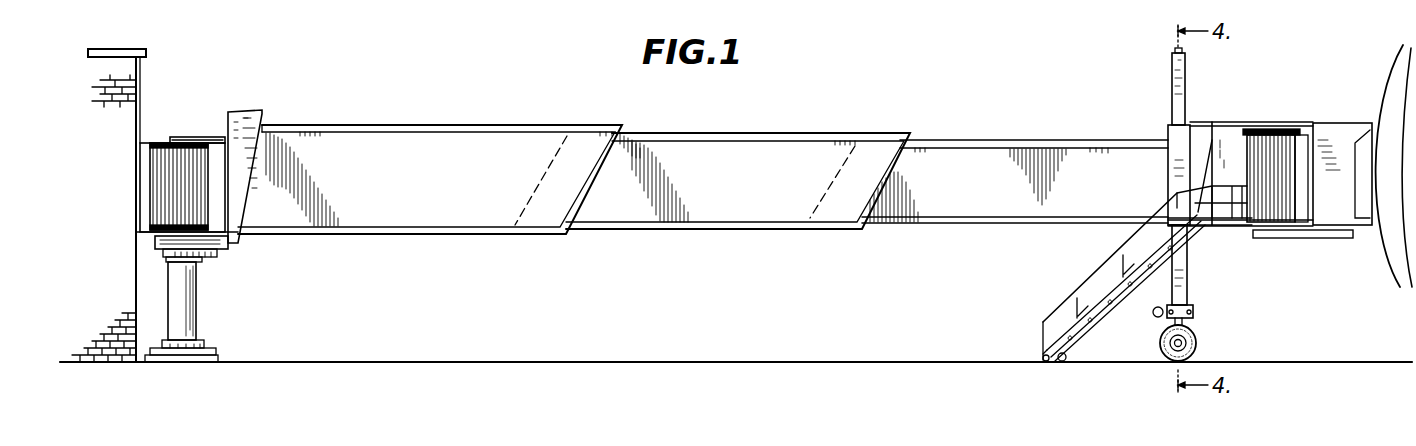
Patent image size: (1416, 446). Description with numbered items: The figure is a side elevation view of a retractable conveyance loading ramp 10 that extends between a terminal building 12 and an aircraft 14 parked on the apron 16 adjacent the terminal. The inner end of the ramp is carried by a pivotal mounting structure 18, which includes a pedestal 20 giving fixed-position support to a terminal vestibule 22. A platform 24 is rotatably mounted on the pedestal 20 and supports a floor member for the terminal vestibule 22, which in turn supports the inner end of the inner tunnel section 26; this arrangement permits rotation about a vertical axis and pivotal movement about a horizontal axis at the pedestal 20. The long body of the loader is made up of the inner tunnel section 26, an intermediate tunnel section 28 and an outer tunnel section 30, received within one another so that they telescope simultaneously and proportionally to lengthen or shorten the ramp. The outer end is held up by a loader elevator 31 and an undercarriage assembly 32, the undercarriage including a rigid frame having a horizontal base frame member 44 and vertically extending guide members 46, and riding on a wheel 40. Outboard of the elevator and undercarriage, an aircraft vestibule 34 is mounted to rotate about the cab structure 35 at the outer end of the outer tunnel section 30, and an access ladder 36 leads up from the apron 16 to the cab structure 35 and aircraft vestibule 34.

The retractable conveyance loading ramp 10 is at (698, 159).
The terminal building 12 is at (137, 72).
The aircraft 14 is at (1392, 84).
The apron 16 is at (737, 362).
The pivotal mounting structure 18 is at (182, 152).
The pedestal 20 is at (197, 310).
The terminal vestibule 22 is at (180, 165).
The platform 24 is at (218, 240).
The inner tunnel section 26 is at (455, 145).
The intermediate tunnel section 28 is at (826, 150).
The outer tunnel section 30 is at (1020, 148).
The loader elevator 31 is at (1189, 263).
The undercarriage assembly 32 is at (1201, 318).
The aircraft vestibule 34 is at (1325, 120).
The cab structure 35 is at (1275, 123).
The access ladder 36 is at (1115, 313).
The wheel 40 is at (1197, 346).
The horizontal base frame member 44 is at (1190, 305).
The guide member 46 is at (1175, 100).